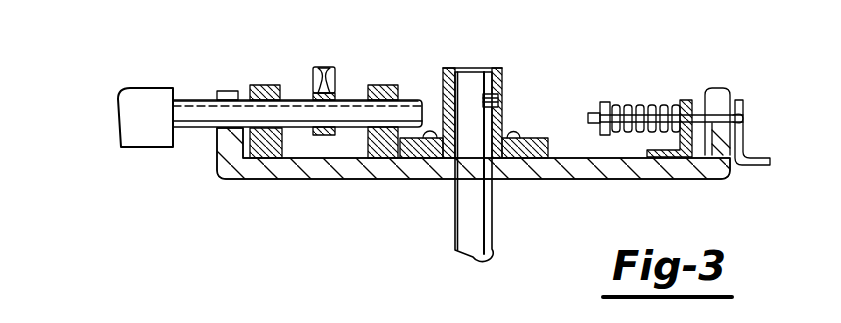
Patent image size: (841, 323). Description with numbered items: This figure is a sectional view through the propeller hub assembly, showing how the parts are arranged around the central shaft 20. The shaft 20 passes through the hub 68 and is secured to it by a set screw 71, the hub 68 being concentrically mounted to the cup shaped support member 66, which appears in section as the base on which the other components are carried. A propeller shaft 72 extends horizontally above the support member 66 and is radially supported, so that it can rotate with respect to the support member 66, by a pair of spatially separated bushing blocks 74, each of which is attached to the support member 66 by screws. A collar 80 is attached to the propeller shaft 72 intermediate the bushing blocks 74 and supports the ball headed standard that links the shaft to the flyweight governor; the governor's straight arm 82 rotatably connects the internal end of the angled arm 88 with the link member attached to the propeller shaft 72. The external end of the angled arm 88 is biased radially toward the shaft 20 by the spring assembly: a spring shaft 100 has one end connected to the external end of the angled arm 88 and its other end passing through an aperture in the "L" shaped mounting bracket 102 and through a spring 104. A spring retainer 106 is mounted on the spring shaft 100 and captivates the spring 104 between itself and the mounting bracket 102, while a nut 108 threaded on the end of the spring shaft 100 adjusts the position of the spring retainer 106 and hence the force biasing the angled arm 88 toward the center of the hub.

The shaft 20 is at (490, 222).
The cup shaped support member 66 is at (333, 180).
The hub 68 is at (530, 138).
The set screw 71 is at (505, 96).
The propeller shaft 72 is at (228, 57).
The bushing block 74 is at (262, 86).
The collar 80 is at (298, 94).
The straight arm 82 is at (325, 67).
The angled arm 88 is at (747, 133).
The spring shaft 100 is at (697, 112).
The "L" shaped mounting bracket 102 is at (663, 150).
The spring 104 is at (648, 106).
The spring retainer 106 is at (607, 103).
The nut 108 is at (600, 110).